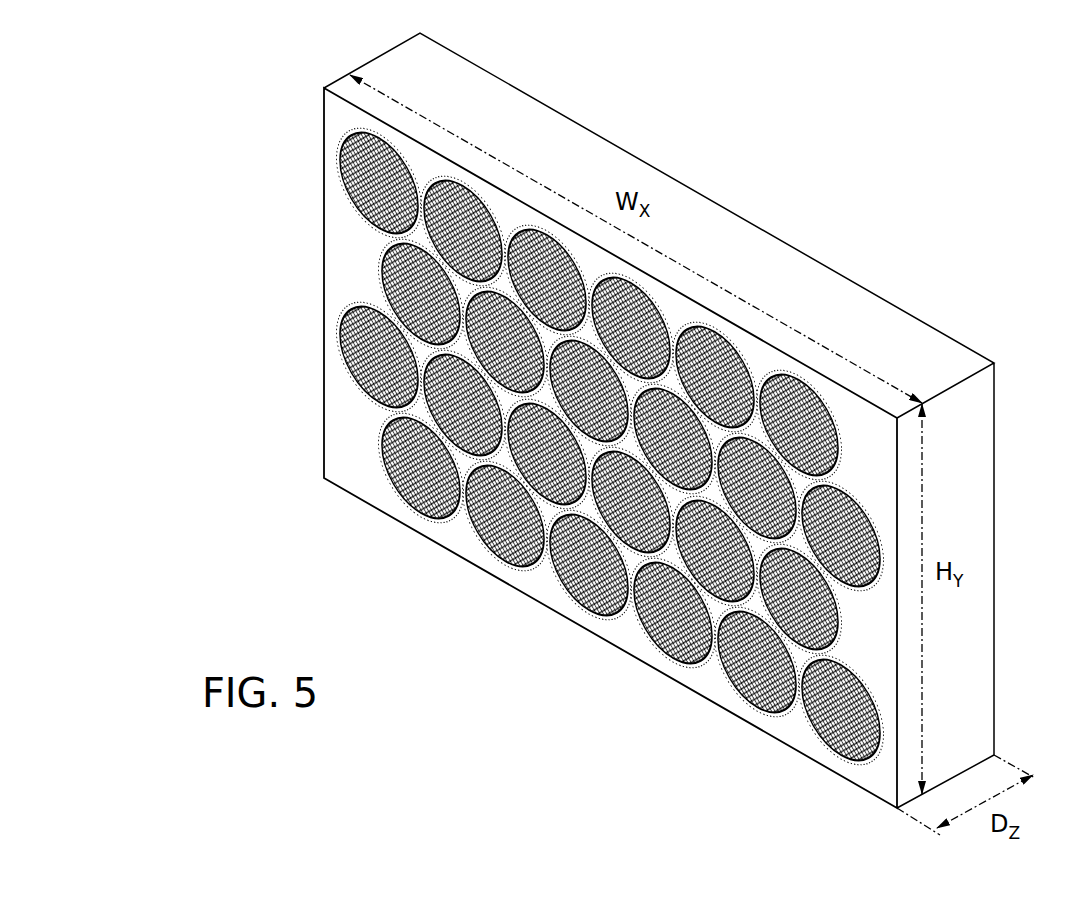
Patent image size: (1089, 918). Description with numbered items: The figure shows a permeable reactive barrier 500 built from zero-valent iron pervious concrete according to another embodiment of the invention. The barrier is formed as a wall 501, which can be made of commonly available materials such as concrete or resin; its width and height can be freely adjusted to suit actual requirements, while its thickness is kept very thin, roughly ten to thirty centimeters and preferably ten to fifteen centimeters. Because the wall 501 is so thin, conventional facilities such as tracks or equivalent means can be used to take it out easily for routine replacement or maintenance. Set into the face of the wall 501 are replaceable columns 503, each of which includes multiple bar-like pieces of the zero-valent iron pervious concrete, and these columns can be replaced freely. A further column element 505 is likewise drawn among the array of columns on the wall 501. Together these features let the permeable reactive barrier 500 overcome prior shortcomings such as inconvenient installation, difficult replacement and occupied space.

The permeable reactive barrier 500 is at (250, 98).
The wall 501 is at (333, 392).
The replaceable columns 503 is at (337, 164).
The second pattern element 505 is at (382, 268).